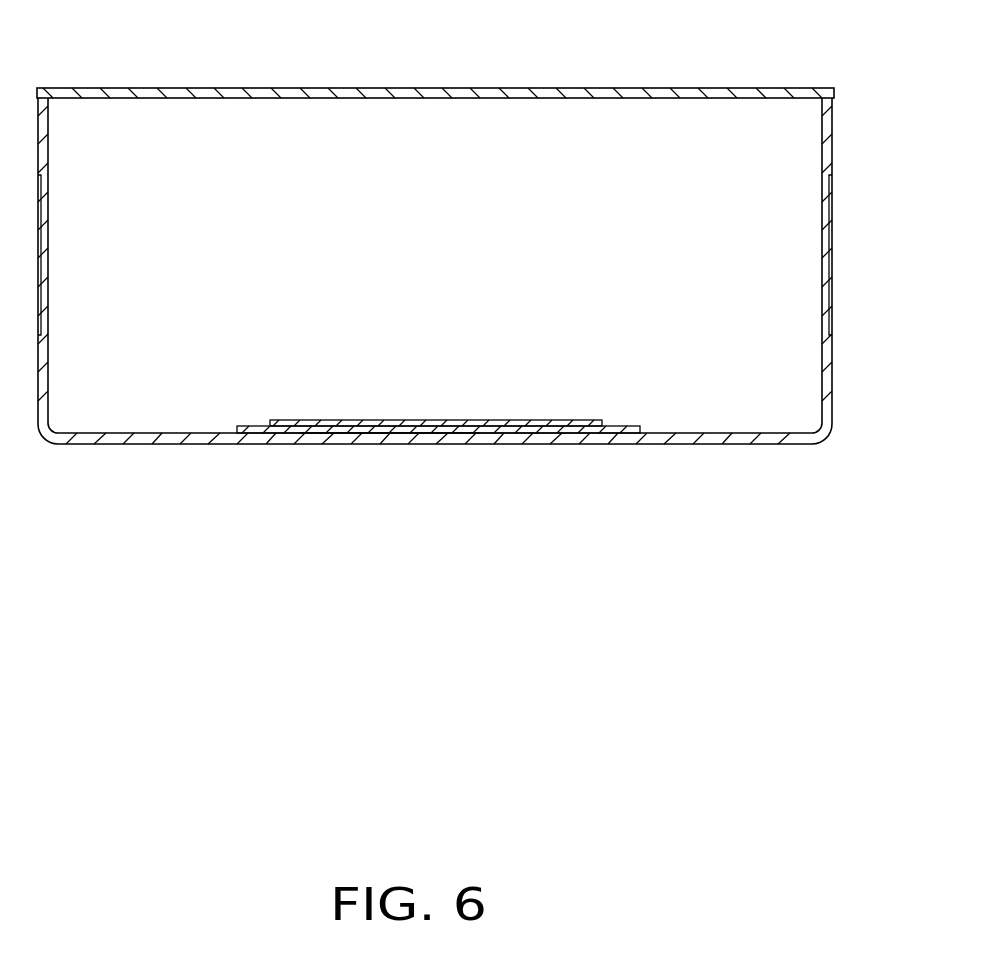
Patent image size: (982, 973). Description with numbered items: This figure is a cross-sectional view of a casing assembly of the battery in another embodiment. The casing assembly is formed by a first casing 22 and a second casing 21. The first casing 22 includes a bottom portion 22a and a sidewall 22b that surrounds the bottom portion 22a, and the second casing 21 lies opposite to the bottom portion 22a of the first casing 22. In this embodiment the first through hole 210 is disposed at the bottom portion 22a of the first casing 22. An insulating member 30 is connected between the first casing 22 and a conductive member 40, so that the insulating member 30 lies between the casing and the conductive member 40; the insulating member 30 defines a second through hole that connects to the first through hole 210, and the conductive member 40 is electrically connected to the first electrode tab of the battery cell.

The second casing 21 is at (500, 95).
The first casing 22 is at (462, 340).
The bottom portion 22a is at (736, 444).
The sidewall 22b is at (829, 378).
The insulating member 30 is at (622, 430).
The conductive member 40 is at (283, 428).
The first through hole 210 is at (388, 438).